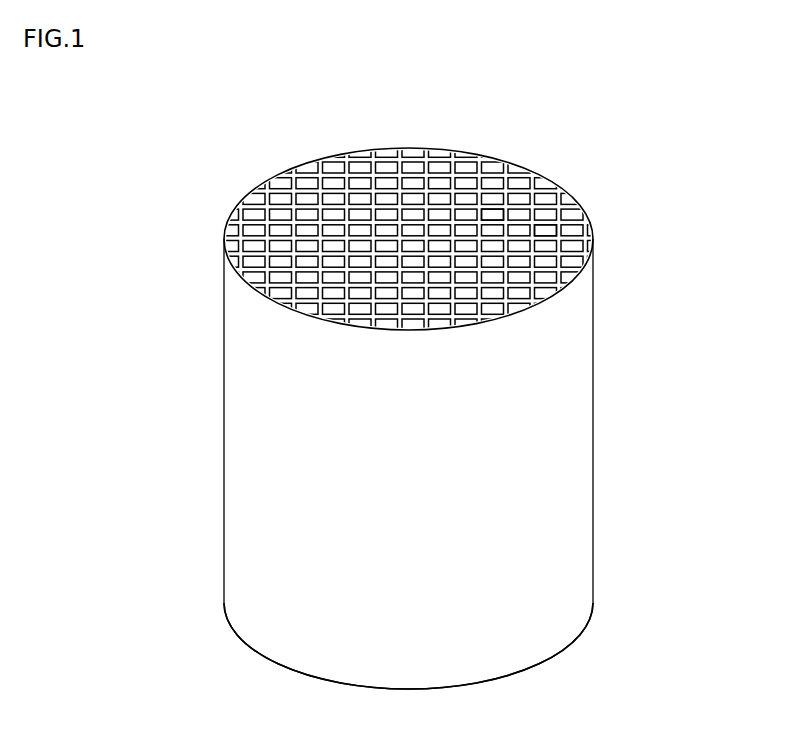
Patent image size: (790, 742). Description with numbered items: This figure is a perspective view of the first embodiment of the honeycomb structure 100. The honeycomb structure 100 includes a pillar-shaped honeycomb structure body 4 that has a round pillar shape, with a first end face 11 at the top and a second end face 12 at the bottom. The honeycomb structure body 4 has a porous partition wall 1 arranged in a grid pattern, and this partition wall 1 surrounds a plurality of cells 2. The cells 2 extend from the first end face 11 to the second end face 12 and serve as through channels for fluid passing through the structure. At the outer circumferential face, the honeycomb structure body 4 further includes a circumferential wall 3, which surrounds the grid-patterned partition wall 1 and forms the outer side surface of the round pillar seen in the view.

The honeycomb structure 100 is at (720, 100).
The partition wall 1 is at (505, 207).
The cells 2 is at (545, 228).
The circumferential wall 3 is at (562, 363).
The honeycomb structure body 4 is at (597, 282).
The first end face 11 is at (297, 163).
The second end face 12 is at (247, 652).